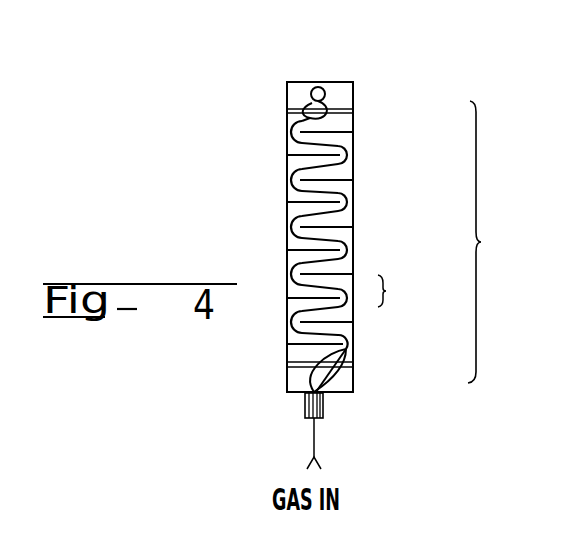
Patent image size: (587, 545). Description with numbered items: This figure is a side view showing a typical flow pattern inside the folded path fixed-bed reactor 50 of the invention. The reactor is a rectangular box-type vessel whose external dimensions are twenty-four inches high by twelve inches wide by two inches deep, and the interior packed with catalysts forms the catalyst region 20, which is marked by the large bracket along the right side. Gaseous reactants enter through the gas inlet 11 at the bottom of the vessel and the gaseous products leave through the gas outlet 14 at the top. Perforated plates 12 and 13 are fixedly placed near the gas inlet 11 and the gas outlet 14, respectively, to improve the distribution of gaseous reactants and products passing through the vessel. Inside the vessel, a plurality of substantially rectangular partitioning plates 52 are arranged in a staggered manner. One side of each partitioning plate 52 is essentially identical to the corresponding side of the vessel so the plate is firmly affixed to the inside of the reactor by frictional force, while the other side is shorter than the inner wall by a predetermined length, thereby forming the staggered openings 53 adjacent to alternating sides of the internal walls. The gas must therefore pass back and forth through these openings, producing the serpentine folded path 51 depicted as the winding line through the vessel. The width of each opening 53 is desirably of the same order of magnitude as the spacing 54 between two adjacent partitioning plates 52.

The gas inlet 11 is at (303, 393).
The perforated plate 12 is at (352, 360).
The perforated plate 13 is at (353, 110).
The gas outlet 14 is at (313, 89).
The catalyst region 20 is at (495, 242).
The folded path reactor 50 is at (370, 213).
The folded path 51 is at (292, 216).
The partitioning plates 52 is at (297, 147).
The staggered openings 53 is at (355, 145).
The spacing 54 is at (406, 292).